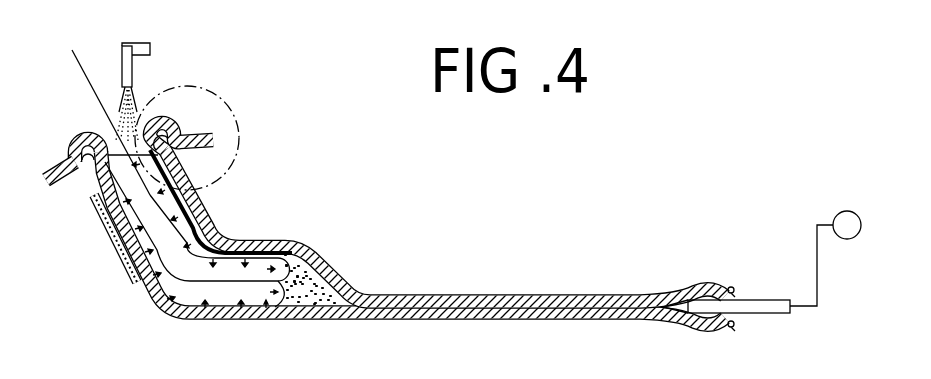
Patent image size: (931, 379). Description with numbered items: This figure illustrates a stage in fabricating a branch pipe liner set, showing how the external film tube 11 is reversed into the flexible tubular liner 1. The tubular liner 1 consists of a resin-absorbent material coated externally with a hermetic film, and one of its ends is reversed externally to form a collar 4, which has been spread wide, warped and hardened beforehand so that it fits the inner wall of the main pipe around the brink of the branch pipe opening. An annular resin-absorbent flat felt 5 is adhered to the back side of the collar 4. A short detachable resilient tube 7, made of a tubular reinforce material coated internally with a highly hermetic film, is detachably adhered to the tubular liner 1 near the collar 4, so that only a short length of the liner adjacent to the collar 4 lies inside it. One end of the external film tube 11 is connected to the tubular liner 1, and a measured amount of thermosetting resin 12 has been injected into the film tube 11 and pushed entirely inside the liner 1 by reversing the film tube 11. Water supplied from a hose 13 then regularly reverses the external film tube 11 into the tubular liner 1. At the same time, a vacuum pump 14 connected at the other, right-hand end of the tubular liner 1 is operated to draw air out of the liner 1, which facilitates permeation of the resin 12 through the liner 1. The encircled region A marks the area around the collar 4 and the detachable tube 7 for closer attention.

The flexible tubular liner 1 is at (352, 272).
The collar 4 is at (62, 160).
The annular resin-absorbent flat felt 5 is at (64, 192).
The detachable resilient tube 7 is at (110, 258).
The external film tube 11 is at (92, 82).
The thermosetting resin 12 is at (298, 320).
The hose 13 is at (124, 46).
The vacuum pump 14 is at (838, 212).
The detail region A is at (240, 140).